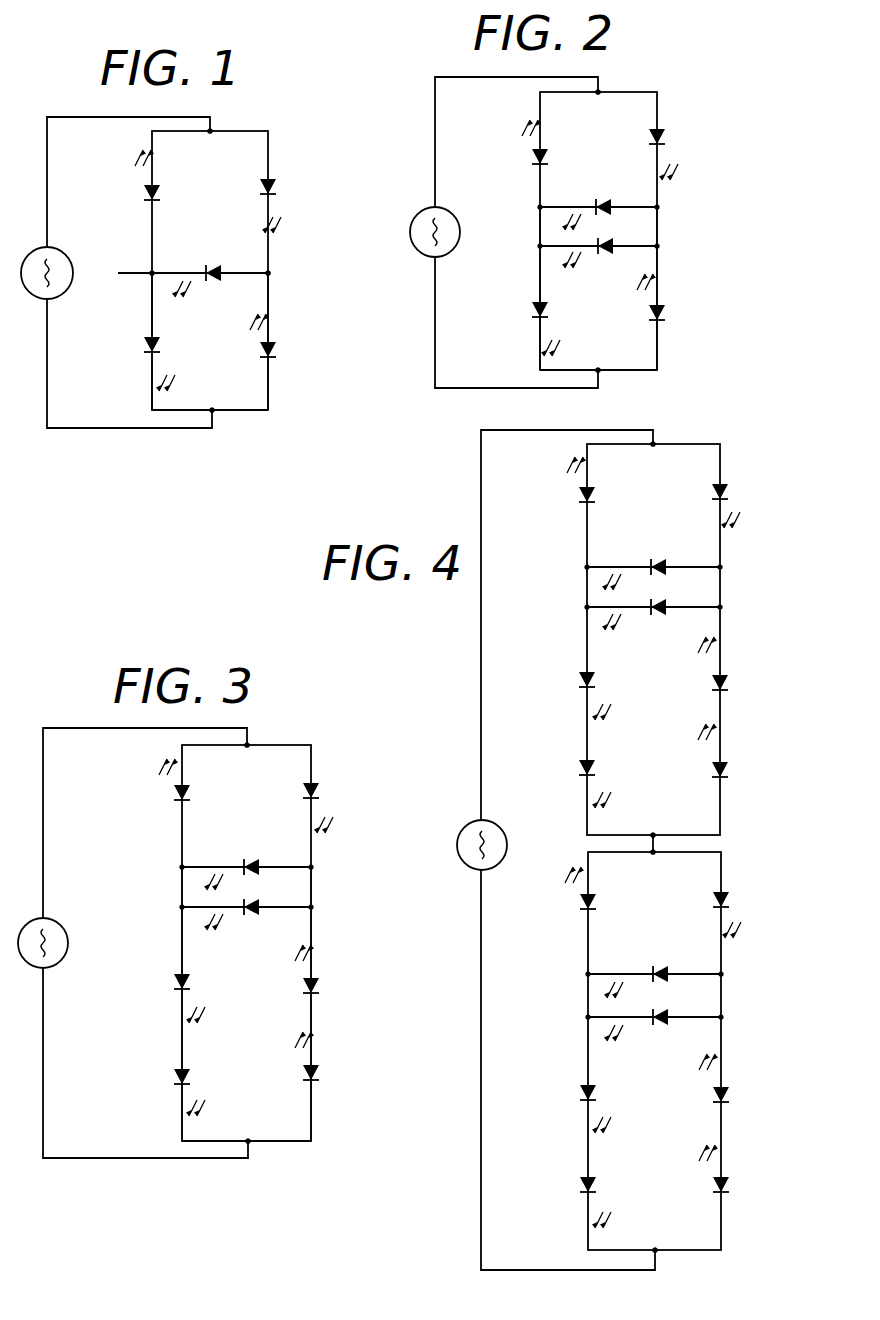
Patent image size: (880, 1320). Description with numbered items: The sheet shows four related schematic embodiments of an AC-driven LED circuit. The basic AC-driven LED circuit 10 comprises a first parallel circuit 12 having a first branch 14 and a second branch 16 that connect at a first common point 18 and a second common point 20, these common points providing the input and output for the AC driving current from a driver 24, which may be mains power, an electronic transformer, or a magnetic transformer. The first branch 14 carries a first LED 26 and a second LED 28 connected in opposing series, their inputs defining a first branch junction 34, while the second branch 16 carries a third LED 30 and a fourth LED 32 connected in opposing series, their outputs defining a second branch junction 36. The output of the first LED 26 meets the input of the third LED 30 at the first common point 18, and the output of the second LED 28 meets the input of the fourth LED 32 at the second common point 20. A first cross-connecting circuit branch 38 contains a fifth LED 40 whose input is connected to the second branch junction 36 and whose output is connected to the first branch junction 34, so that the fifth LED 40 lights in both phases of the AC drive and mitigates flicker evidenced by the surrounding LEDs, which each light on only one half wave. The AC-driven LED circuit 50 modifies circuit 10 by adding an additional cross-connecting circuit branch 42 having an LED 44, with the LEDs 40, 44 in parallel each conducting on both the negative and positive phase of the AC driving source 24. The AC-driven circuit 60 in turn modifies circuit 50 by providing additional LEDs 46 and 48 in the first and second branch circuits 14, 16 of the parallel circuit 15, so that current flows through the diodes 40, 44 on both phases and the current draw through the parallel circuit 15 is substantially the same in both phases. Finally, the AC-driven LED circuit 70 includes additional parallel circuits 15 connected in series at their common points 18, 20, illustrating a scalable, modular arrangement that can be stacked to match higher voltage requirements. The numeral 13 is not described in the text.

In FIG. 1, the AC-driven LED circuit 10 is at (250, 118).
In FIG. 1, the first parallel circuit 12 is at (246, 417).
In FIG. 2, the LED bridge rectifier circuit 13 is at (626, 375).
In FIG. 1, the first branch 14 is at (144, 311).
In FIG. 2, the first branch 14 is at (534, 267).
In FIG. 3, the first branch 14 is at (174, 1044).
In FIG. 3, the parallel circuit 15 is at (271, 1150).
In FIG. 4, the parallel circuit 15 is at (727, 632).
In FIG. 1, the second branch 16 is at (260, 372).
In FIG. 2, the second branch 16 is at (664, 347).
In FIG. 3, the second branch 16 is at (319, 1027).
In FIG. 1, the first common point 18 is at (210, 133).
In FIG. 2, the first common point 18 is at (598, 94).
In FIG. 3, the first common point 18 is at (247, 747).
In FIG. 4, the first common point 18 is at (653, 447).
In FIG. 1, the second common point 20 is at (212, 408).
In FIG. 2, the second common point 20 is at (598, 368).
In FIG. 3, the second common point 20 is at (248, 1139).
In FIG. 4, the second common point 20 is at (653, 833).
In FIG. 1, the driver 24 is at (49, 246).
In FIG. 2, the driver 24 is at (414, 224).
In FIG. 3, the driver 24 is at (56, 920).
In FIG. 4, the driver 24 is at (459, 851).
In FIG. 1, the first LED 26 is at (148, 193).
In FIG. 2, the first LED 26 is at (537, 158).
In FIG. 3, the first LED 26 is at (178, 794).
In FIG. 4, the first LED 26 is at (584, 500).
In FIG. 1, the second LED 28 is at (149, 348).
In FIG. 2, the second LED 28 is at (538, 310).
In FIG. 3, the second LED 28 is at (178, 984).
In FIG. 4, the second LED 28 is at (583, 682).
In FIG. 1, the third LED 30 is at (272, 187).
In FIG. 2, the third LED 30 is at (660, 137).
In FIG. 3, the third LED 30 is at (314, 790).
In FIG. 4, the third LED 30 is at (724, 490).
In FIG. 1, the fourth LED 32 is at (272, 352).
In FIG. 2, the fourth LED 32 is at (660, 313).
In FIG. 3, the fourth LED 32 is at (315, 986).
In FIG. 4, the fourth LED 32 is at (724, 683).
In FIG. 1, the first branch junction 34 is at (118, 273).
In FIG. 2, the first branch junction 34 is at (538, 232).
In FIG. 3, the first branch junction 34 is at (180, 890).
In FIG. 1, the second branch junction 36 is at (269, 273).
In FIG. 2, the second branch junction 36 is at (658, 238).
In FIG. 3, the second branch junction 36 is at (313, 880).
In FIG. 1, the first cross-connecting circuit branch 38 is at (179, 264).
In FIG. 2, the first cross-connecting circuit branch 38 is at (563, 198).
In FIG. 3, the first cross-connecting circuit branch 38 is at (211, 858).
In FIG. 1, the fifth LED 40 is at (215, 283).
In FIG. 2, the fifth LED 40 is at (606, 203).
In FIG. 3, the fifth LED 40 is at (254, 865).
In FIG. 4, the fifth LED 40 is at (660, 562).
In FIG. 2, the additional cross-connecting circuit branch 42 is at (550, 254).
In FIG. 3, the additional cross-connecting circuit branch 42 is at (196, 924).
In FIG. 2, the LED 44 is at (612, 252).
In FIG. 3, the LED 44 is at (255, 913).
In FIG. 4, the LED 44 is at (662, 612).
In FIG. 3, the additional LED 46 is at (179, 1079).
In FIG. 4, the additional LED 46 is at (584, 765).
In FIG. 3, the additional LED 48 is at (315, 1073).
In FIG. 4, the additional LED 48 is at (717, 770).
In FIG. 2, the AC-driven LED circuit 50 is at (640, 73).
In FIG. 3, the AC-driven circuit 60 is at (285, 732).
In FIG. 4, the AC-driven LED circuit 70 is at (468, 624).